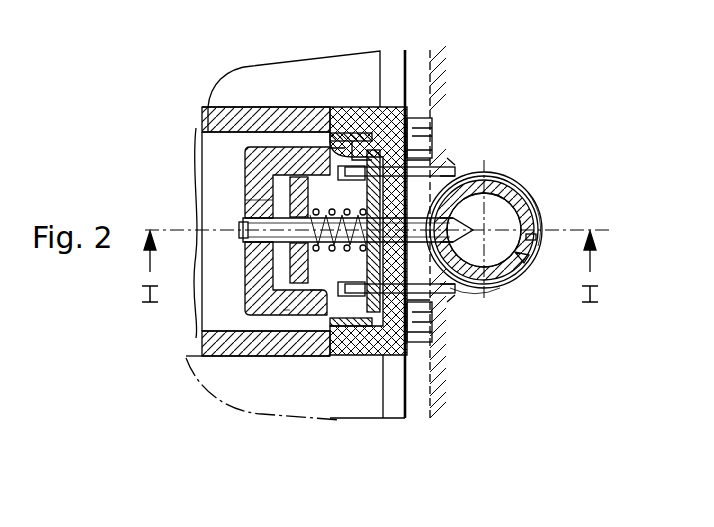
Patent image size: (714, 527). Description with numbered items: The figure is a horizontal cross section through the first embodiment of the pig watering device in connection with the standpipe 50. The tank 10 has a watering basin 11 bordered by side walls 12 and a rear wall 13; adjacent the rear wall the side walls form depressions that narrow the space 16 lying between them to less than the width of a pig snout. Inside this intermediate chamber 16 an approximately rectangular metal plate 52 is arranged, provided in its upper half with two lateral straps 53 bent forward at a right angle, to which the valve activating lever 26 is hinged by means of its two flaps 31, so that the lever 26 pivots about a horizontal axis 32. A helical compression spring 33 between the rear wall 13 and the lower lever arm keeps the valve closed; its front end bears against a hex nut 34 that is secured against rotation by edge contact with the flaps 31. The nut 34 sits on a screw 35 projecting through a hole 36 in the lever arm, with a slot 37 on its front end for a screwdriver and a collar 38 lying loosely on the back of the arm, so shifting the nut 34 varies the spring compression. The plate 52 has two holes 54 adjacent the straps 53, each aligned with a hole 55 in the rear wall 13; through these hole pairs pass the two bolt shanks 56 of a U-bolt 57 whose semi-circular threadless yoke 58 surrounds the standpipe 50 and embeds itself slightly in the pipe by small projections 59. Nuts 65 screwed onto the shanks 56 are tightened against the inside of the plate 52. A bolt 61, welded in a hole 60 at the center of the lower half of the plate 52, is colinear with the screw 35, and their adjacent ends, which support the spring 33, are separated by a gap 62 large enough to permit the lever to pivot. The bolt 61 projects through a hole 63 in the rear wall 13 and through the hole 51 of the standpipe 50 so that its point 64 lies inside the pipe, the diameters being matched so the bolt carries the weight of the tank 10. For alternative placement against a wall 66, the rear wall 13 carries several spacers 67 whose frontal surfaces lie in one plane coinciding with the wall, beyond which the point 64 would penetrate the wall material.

The tank 10 is at (200, 132).
The watering basin 11 is at (330, 140).
The side walls 12 is at (208, 125).
The rear wall 13 is at (455, 168).
The space 16 is at (283, 148).
The valve activating lever 26 is at (240, 177).
The flaps 31 is at (245, 135).
The horizontal axis 32 is at (385, 110).
The helical compression spring 33 is at (320, 292).
The hex nut 34 is at (188, 358).
The screw 35 is at (238, 245).
The hole 36 is at (245, 205).
The slot 37 is at (243, 228).
The collar 38 is at (283, 262).
The standpipe 50 is at (532, 262).
The hole 51 is at (482, 230).
The metal plate 52 is at (366, 182).
The lateral straps 53 is at (366, 155).
The holes 54 is at (430, 120).
The hole 55 is at (456, 171).
The bolt shanks 56 is at (458, 179).
The U-bolt 57 is at (540, 224).
The yoke 58 is at (528, 198).
The small projections 59 is at (530, 182).
The hole 60 is at (345, 255).
The bolt 61 is at (480, 290).
The gap 62 is at (300, 322).
The hole 63 is at (440, 218).
The point 64 is at (536, 236).
The nuts 65 is at (410, 112).
The wall 66 is at (436, 128).
The spacers 67 is at (440, 160).